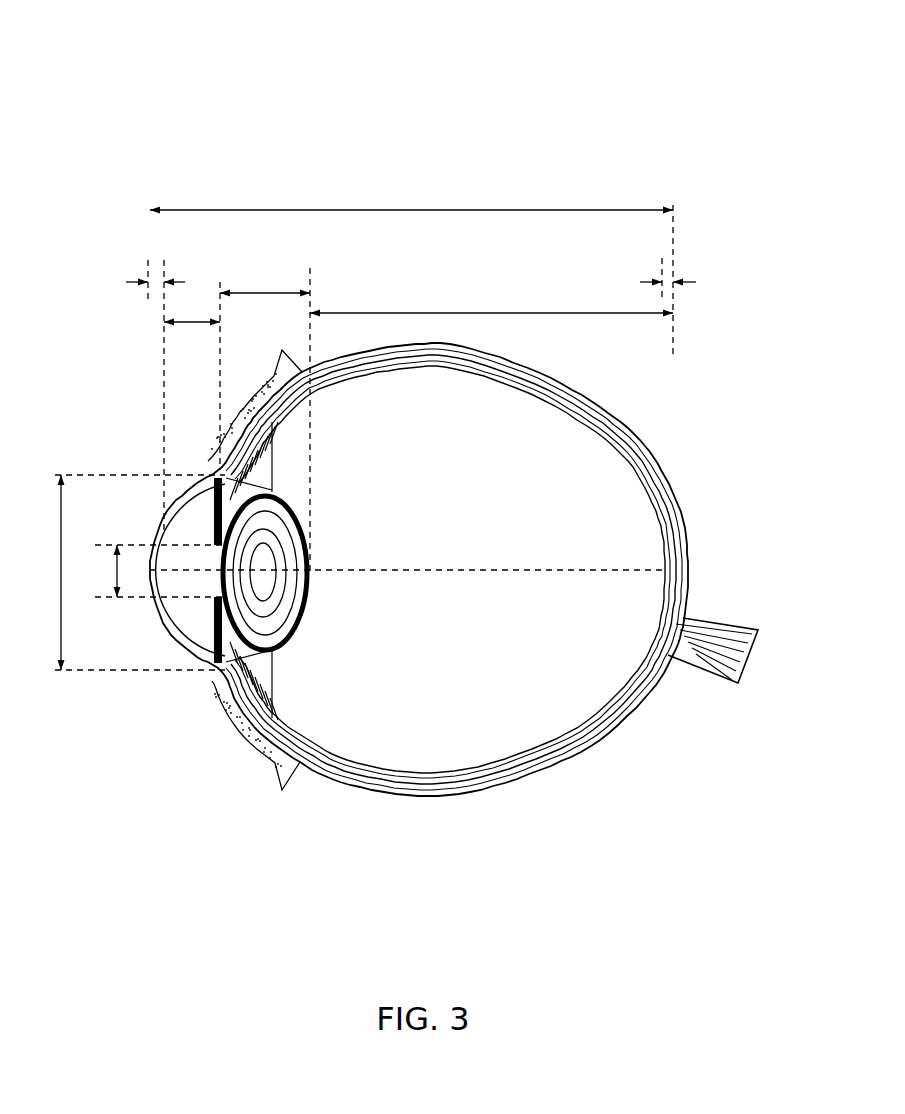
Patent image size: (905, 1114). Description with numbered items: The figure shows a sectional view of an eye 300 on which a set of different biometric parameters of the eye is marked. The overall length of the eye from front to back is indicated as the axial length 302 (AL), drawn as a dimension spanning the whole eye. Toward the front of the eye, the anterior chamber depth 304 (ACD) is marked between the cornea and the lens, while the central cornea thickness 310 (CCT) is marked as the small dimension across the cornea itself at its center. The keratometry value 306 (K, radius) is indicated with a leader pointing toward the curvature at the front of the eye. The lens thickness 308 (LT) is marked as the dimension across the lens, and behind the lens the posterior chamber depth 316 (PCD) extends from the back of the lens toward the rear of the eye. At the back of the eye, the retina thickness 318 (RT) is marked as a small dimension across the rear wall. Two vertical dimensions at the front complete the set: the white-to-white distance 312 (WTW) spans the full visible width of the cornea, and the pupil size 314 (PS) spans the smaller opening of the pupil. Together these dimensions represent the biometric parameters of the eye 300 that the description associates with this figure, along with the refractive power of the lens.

The eye 300 is at (140, 103).
The axial length 302 is at (411, 193).
The anterior chamber depth 304 is at (195, 322).
The keratometry value 306 is at (256, 567).
The lens thickness 308 is at (265, 277).
The central cornea thickness 310 is at (155, 260).
The white-to-white distance 312 is at (35, 572).
The pupil size 314 is at (117, 552).
The posterior chamber depth 316 is at (491, 298).
The retina thickness 318 is at (693, 262).